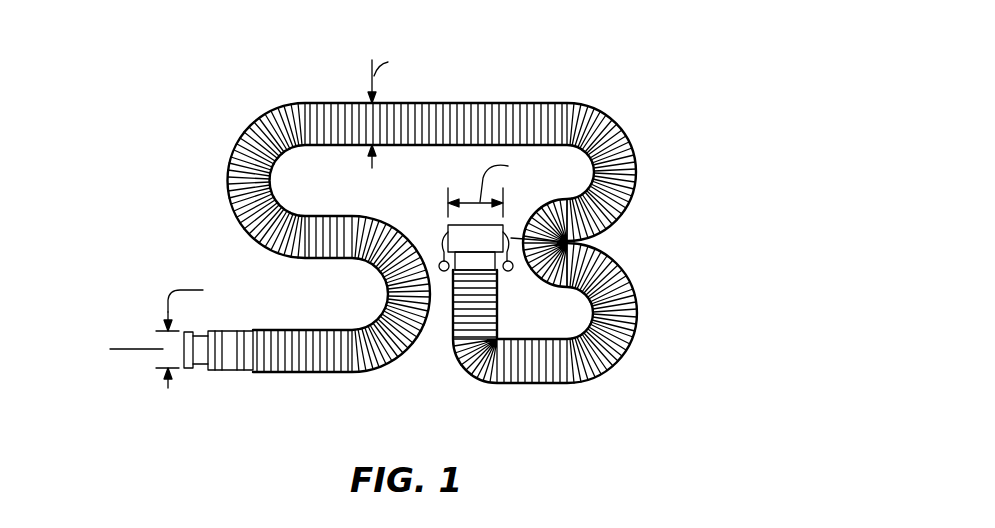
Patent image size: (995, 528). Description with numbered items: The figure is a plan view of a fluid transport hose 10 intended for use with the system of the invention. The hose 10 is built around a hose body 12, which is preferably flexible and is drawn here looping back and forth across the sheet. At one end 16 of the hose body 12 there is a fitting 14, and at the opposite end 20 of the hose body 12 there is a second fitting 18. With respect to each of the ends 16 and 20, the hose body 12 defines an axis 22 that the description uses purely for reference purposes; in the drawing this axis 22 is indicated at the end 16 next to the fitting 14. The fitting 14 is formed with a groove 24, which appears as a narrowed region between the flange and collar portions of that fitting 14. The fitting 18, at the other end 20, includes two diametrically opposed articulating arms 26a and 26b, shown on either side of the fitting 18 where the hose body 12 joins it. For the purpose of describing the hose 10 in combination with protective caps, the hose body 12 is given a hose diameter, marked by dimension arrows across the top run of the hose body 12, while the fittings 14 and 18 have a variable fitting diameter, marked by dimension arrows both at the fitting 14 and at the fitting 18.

The fluid transport hose 10 is at (628, 66).
The hose body 12 is at (634, 190).
The fitting 14 is at (187, 370).
The end 16 is at (226, 371).
The fitting 18 is at (447, 240).
The end 20 is at (484, 264).
The axis 22 is at (115, 349).
The groove 24 is at (204, 326).
The articulating arm 26a is at (440, 250).
The articulating arm 26b is at (571, 244).